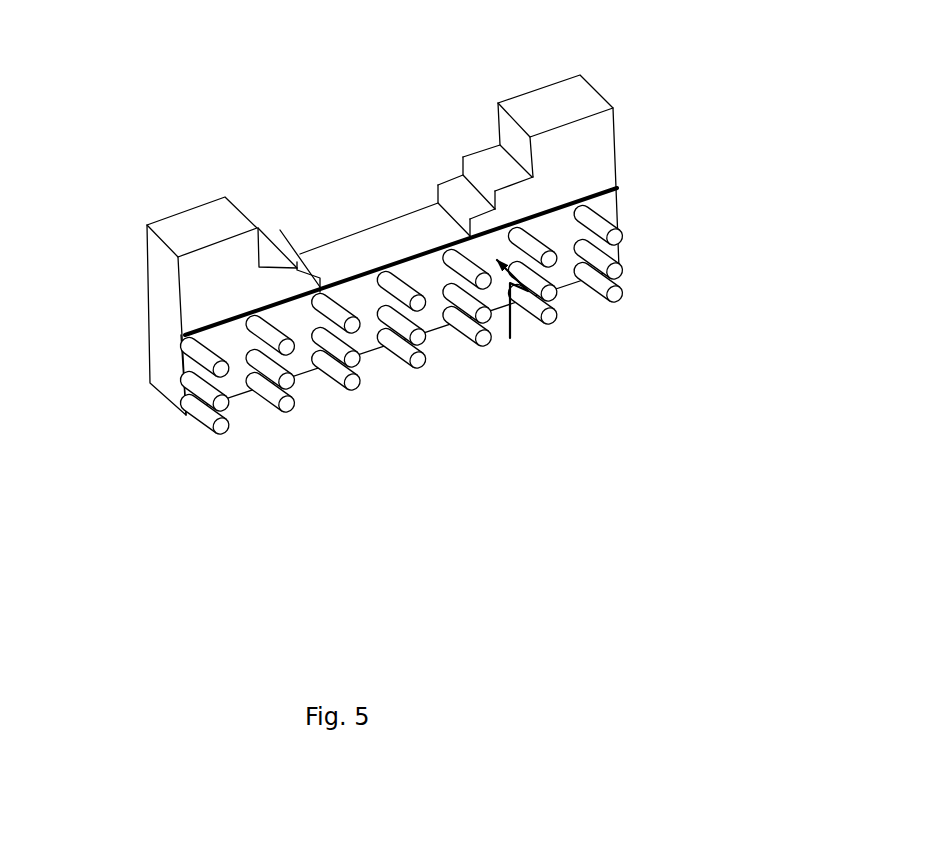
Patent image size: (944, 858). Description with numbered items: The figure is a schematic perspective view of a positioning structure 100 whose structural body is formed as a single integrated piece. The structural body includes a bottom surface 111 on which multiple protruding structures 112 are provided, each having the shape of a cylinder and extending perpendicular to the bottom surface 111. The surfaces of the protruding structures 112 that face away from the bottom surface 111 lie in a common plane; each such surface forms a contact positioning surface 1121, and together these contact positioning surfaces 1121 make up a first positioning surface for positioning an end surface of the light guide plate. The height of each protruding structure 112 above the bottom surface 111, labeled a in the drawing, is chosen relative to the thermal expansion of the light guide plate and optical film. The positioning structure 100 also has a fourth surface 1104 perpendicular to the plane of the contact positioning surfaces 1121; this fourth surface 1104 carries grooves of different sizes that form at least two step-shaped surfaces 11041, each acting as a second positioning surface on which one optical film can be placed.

The positioning structure 100 is at (359, 324).
The bottom surface 111 is at (359, 369).
The protruding structure 112 is at (179, 420).
The contact positioning surface 1121 is at (229, 401).
The fourth surface 1104 is at (332, 210).
The step-shaped surface 11041 is at (295, 247).